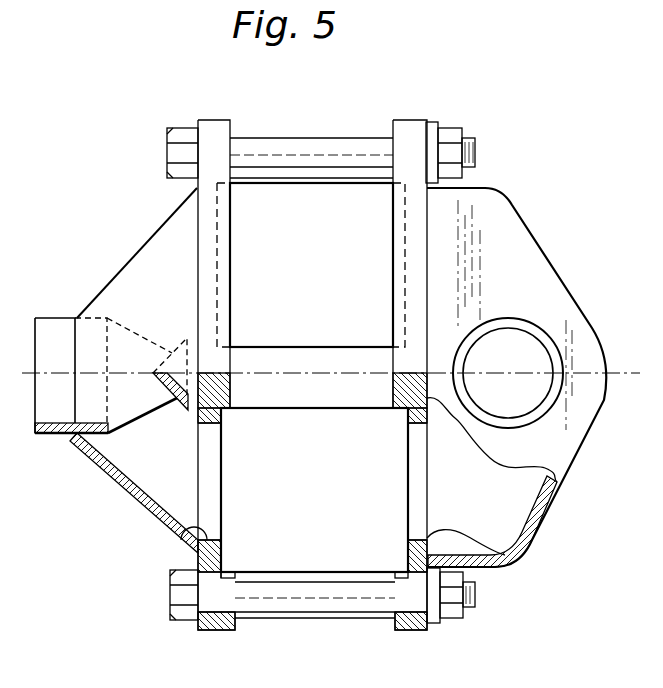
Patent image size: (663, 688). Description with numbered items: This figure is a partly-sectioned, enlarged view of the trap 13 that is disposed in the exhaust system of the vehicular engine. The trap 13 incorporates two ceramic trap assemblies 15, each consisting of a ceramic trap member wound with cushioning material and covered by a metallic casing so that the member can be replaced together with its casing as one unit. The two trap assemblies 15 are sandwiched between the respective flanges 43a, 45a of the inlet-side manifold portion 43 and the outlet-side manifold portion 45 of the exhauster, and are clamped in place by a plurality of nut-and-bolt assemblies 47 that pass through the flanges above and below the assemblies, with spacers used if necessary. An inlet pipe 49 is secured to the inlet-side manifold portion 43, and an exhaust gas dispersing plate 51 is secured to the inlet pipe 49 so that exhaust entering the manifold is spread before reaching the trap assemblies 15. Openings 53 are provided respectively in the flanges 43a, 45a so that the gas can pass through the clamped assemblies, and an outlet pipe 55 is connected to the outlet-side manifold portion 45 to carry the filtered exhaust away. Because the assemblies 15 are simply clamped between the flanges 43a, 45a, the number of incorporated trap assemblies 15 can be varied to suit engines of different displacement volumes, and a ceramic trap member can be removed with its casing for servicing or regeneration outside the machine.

The trap 13 is at (331, 361).
The ceramic trap assembly 15 is at (332, 268).
The inlet-side manifold portion 43 is at (145, 263).
The flange of inlet-side manifold portion 43a is at (210, 133).
The outlet-side manifold portion 45 is at (512, 243).
The flange of outlet-side manifold portion 45a is at (407, 132).
The nut-and-bolt assembly 47 is at (302, 152).
The inlet pipe 49 is at (55, 333).
The exhaust gas dispersing plate 51 is at (177, 402).
The openings 53 is at (177, 537).
The outlet pipe 55 is at (543, 407).